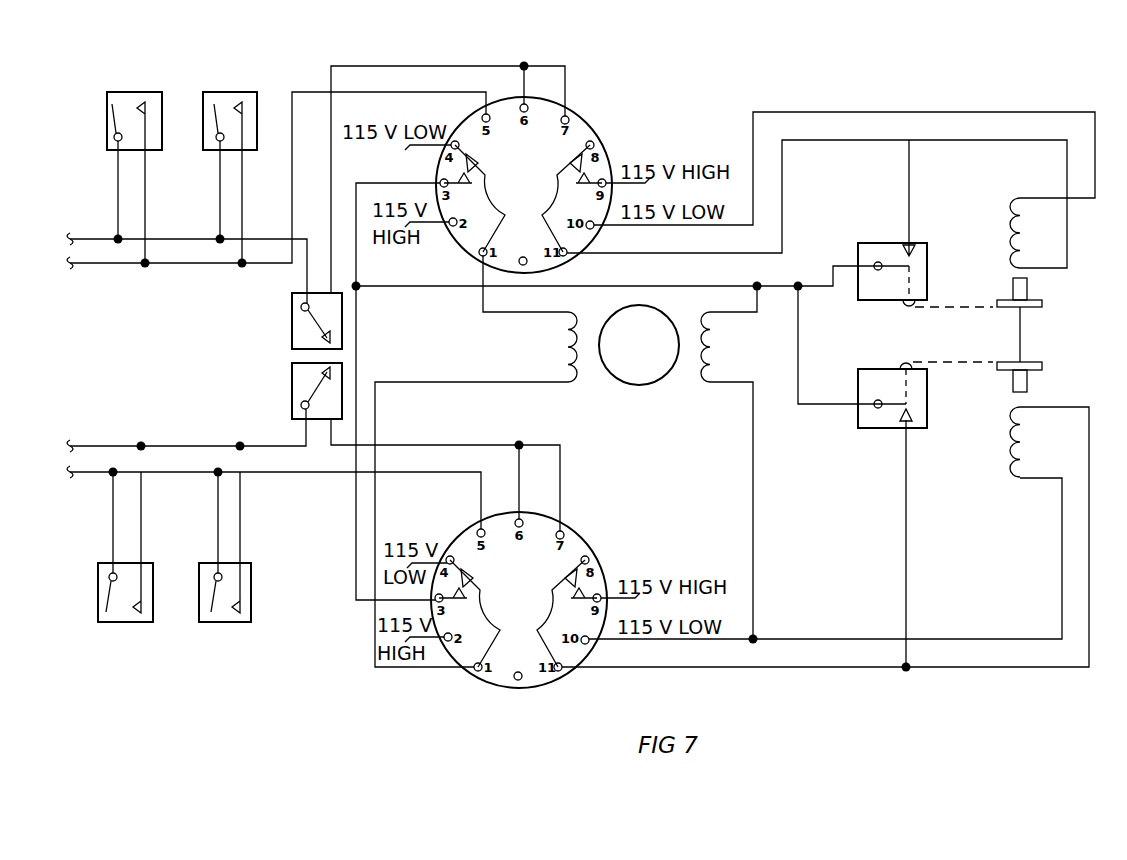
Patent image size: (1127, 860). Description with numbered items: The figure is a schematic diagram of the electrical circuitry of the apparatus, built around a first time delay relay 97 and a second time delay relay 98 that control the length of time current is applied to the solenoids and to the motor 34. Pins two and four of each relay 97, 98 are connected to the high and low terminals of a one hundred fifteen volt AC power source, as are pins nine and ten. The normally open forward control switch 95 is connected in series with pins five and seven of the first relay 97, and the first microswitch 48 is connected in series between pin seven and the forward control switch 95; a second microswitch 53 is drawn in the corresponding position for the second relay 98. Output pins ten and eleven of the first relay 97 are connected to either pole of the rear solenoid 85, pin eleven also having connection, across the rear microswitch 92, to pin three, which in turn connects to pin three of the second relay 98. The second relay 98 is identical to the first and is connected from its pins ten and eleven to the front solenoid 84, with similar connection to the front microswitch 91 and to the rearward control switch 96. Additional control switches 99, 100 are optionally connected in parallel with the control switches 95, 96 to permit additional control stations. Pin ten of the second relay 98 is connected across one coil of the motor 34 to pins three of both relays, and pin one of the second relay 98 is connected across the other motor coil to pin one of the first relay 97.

The motor 34 is at (637, 385).
The first microswitch 48 is at (291, 322).
The relay contact 53 is at (291, 392).
The front solenoid 84 is at (1086, 400).
The rear solenoid 85 is at (1064, 278).
The front microswitch 91 is at (884, 428).
The rear microswitch 92 is at (878, 243).
The forward control switch 95 is at (129, 91).
The rearward control switch 96 is at (124, 623).
The first time delay relay 97 is at (592, 120).
The second time delay relay 98 is at (588, 537).
The additional control switch 99 is at (230, 91).
The alternate rearward control switch 100 is at (227, 623).